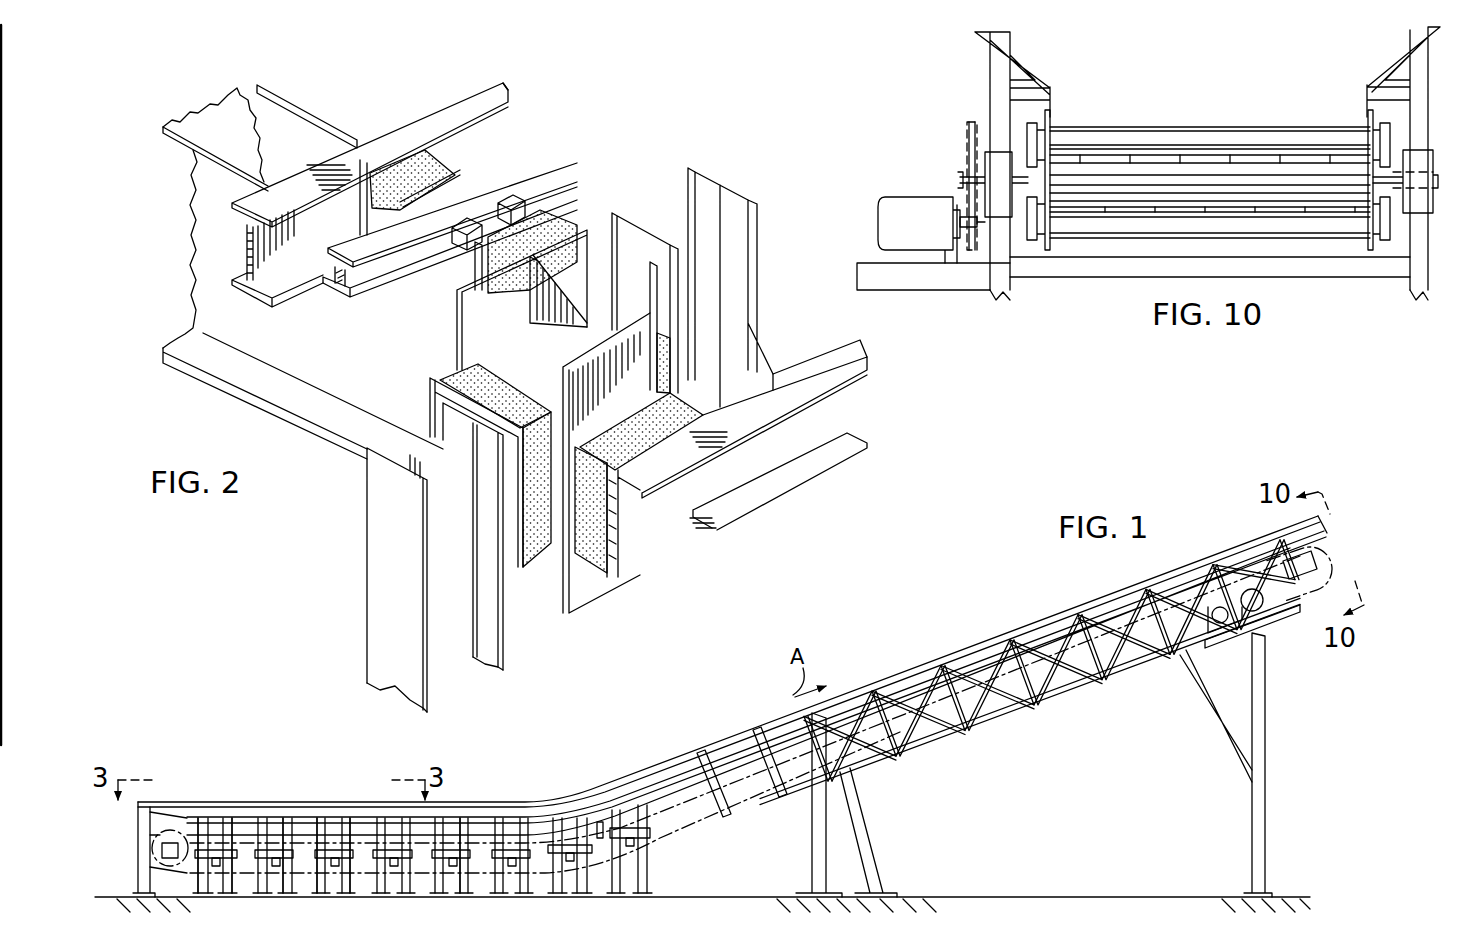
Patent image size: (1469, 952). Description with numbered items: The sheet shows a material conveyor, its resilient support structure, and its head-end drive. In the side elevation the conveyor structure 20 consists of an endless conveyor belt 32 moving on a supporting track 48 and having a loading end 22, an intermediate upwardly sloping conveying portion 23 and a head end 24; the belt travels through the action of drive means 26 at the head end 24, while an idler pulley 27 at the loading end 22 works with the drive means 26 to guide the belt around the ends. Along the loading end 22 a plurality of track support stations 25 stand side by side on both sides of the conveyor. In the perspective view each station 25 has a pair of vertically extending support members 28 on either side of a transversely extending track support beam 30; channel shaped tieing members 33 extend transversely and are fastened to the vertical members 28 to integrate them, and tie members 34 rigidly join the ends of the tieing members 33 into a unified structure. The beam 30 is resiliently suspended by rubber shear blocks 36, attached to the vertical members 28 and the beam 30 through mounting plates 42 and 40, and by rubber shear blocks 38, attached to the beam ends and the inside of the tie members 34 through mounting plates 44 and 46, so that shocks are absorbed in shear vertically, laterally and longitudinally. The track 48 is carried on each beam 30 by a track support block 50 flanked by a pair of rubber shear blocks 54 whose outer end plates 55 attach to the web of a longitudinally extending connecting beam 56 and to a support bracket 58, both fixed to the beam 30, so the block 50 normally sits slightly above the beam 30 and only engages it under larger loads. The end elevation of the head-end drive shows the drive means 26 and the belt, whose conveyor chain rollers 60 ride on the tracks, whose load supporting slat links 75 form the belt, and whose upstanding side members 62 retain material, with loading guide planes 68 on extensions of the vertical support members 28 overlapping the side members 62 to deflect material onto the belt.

In FIG. 1, the conveyor structure 20 is at (995, 772).
In FIG. 1, the loading end 22 is at (190, 768).
In FIG. 1, the intermediate upwardly sloping conveying portion 23 is at (920, 645).
In FIG. 1, the head end 24 is at (1340, 546).
In FIG. 1, the track support stations 25 is at (268, 903).
In FIG. 10, the drive means 26 is at (908, 202).
In FIG. 1, the drive means 26 is at (1255, 605).
In FIG. 1, the idler pulley 27 is at (150, 848).
In FIG. 2, the vertically extending support members 28 is at (738, 247).
In FIG. 1, the vertically extending support members 28 is at (230, 802).
In FIG. 2, the transversely extending track support beam 30 is at (318, 435).
In FIG. 1, the transversely extending track support beam 30 is at (455, 830).
In FIG. 10, the endless conveyor belt 32 is at (1215, 125).
In FIG. 1, the endless conveyor belt 32 is at (720, 768).
In FIG. 2, the channel shaped tieing members 33 is at (783, 327).
In FIG. 2, the tie members 34 is at (805, 468).
In FIG. 1, the tie members 34 is at (277, 850).
In FIG. 2, the rubber shear blocks 36 is at (490, 383).
In FIG. 2, the rubber shear blocks 38 is at (632, 435).
In FIG. 2, the mounting plate 40 is at (462, 322).
In FIG. 2, the mounting plate 42 is at (437, 390).
In FIG. 2, the mounting plate 44 is at (590, 590).
In FIG. 2, the mounting plate 46 is at (613, 567).
In FIG. 2, the conveyor track 48 is at (555, 128).
In FIG. 1, the conveyor track 48 is at (425, 845).
In FIG. 2, the track support block 50 is at (447, 257).
In FIG. 2, the rubber shear blocks 54 is at (390, 165).
In FIG. 2, the end plates 55 is at (360, 195).
In FIG. 2, the longitudinally extending connecting beam 56 is at (285, 285).
In FIG. 2, the support bracket 58 is at (577, 267).
In FIG. 10, the conveyor chain rollers 60 is at (1390, 118).
In FIG. 10, the upstanding side members 62 is at (1048, 137).
In FIG. 10, the loading guide planes 68 is at (1028, 65).
In FIG. 10, the load supporting slat links 75 is at (1272, 178).